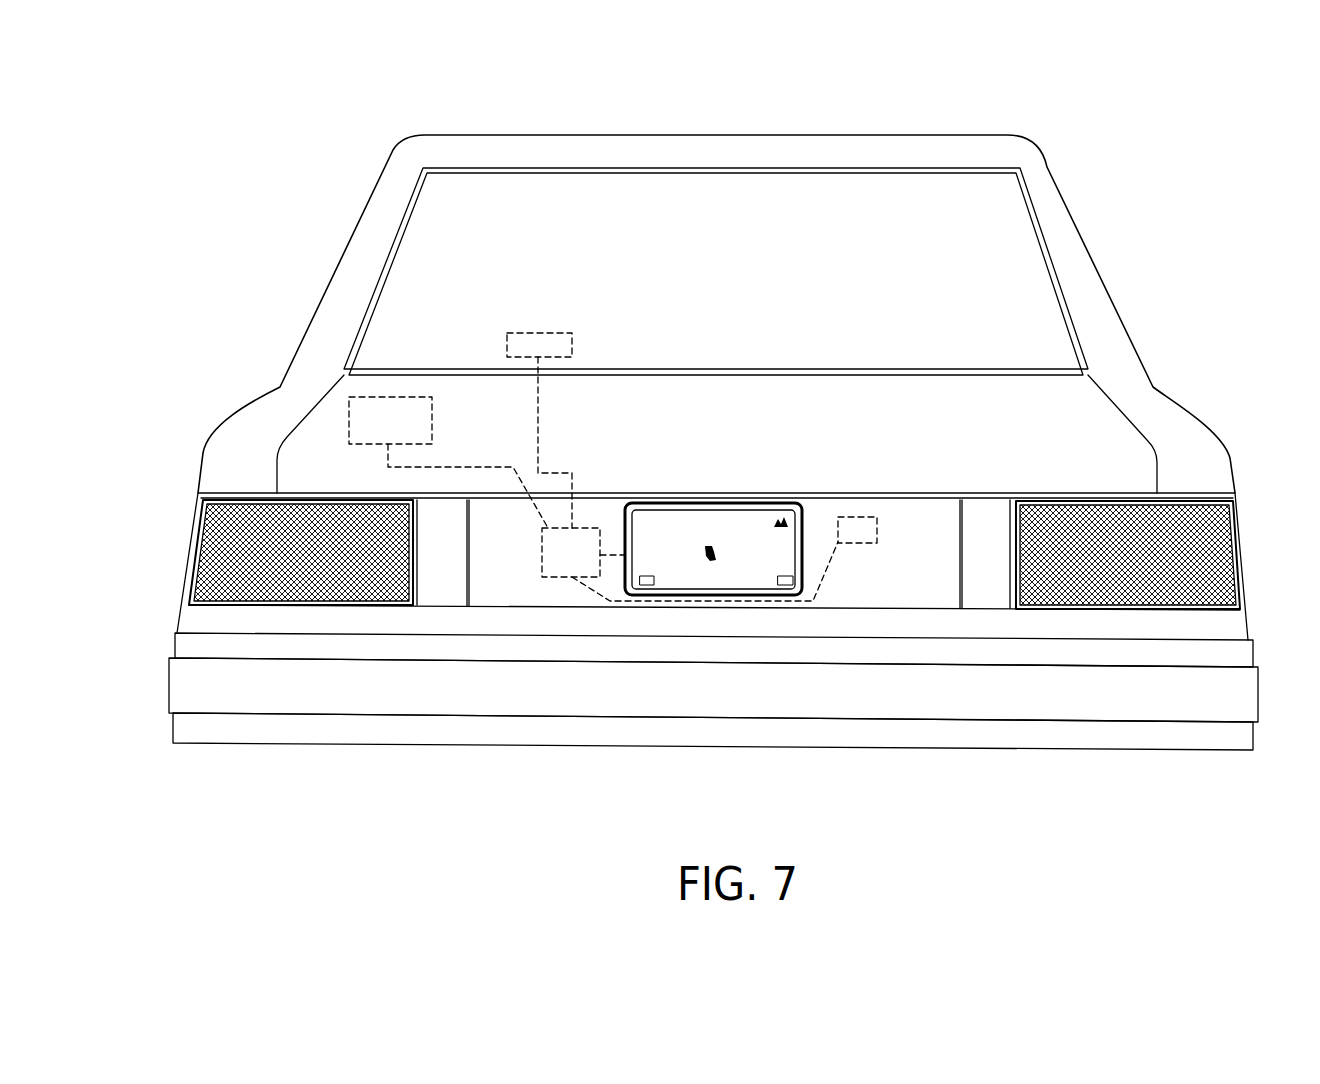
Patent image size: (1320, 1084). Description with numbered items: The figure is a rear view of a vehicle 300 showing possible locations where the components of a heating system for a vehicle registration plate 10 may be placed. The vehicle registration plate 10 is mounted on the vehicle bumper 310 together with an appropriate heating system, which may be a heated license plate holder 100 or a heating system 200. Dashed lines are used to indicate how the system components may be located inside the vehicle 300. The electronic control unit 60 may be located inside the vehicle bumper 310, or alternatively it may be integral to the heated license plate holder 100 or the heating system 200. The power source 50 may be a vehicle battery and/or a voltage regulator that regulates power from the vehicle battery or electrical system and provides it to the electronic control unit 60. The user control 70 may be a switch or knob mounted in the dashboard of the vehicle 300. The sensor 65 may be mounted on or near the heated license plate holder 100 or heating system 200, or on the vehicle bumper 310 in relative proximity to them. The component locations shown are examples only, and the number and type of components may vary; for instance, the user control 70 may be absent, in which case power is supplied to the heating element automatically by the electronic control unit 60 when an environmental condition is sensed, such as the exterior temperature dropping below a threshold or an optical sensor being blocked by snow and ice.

The vehicle registration plate 10 is at (747, 577).
The power source 50 is at (412, 421).
The electronic control unit 60 is at (543, 558).
The sensor 65 is at (908, 500).
The user control 70 is at (553, 333).
The heated license plate holder 100 is at (670, 480).
The heating system 200 is at (757, 649).
The vehicle 300 is at (242, 185).
The vehicle bumper 310 is at (930, 580).